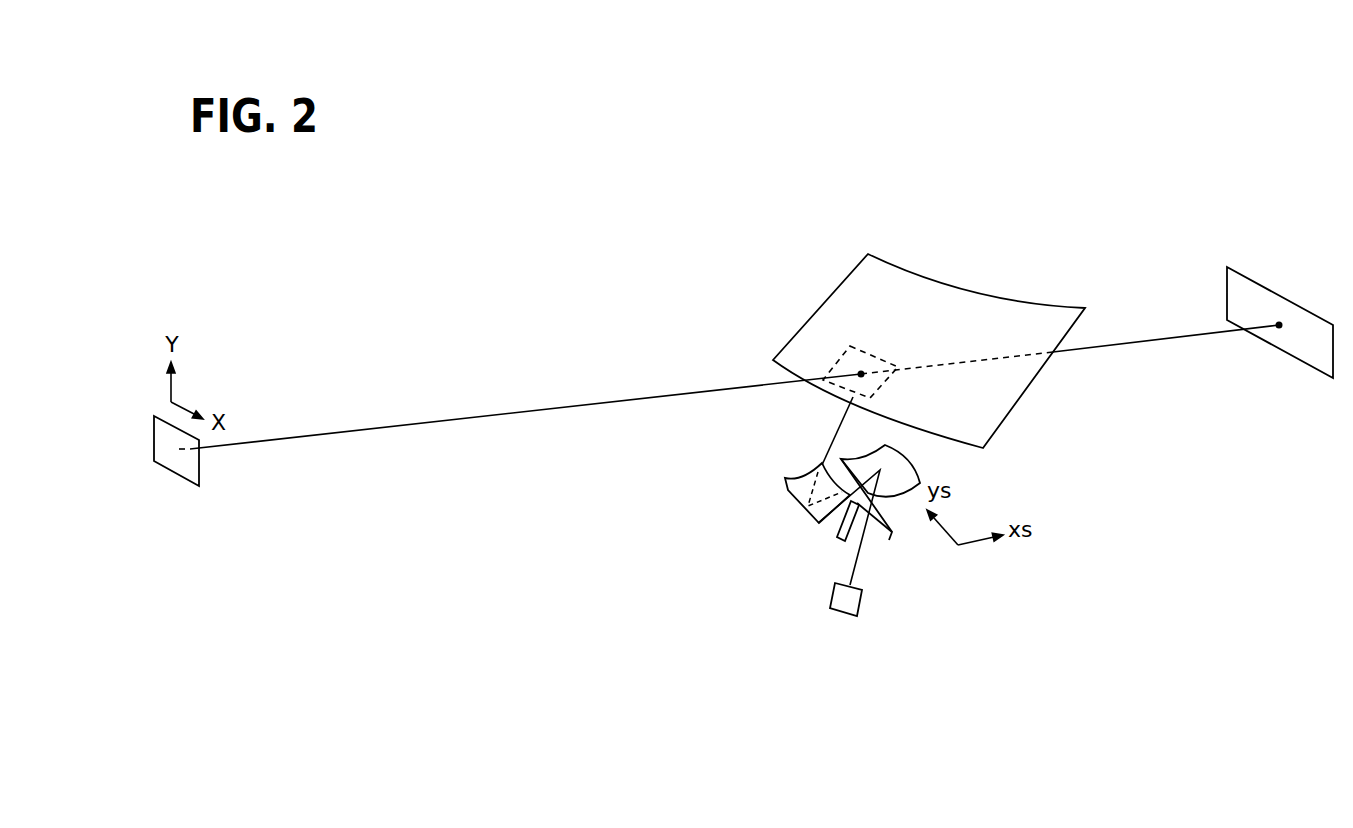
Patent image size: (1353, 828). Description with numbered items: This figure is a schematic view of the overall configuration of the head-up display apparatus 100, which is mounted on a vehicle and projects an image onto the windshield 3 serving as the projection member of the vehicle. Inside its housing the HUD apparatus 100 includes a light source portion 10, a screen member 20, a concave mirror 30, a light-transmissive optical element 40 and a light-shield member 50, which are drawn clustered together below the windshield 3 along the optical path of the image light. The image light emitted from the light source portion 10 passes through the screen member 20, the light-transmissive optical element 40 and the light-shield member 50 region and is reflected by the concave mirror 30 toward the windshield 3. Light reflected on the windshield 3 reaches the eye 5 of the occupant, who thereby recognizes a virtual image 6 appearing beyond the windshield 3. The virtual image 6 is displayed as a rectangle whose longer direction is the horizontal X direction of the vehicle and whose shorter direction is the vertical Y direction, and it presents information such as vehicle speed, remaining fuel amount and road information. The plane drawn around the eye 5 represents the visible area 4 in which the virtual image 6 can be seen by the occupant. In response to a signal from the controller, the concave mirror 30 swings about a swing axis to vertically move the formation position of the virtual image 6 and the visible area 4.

The windshield 3 is at (973, 292).
The visible area 4 is at (1225, 283).
The eye 5 is at (1281, 322).
The virtual image 6 is at (173, 476).
The light source portion 10 is at (835, 615).
The screen member 20 is at (902, 462).
The concave mirror 30 is at (787, 491).
The light-transmissive optical element 40 is at (892, 535).
The light-shield member 50 is at (838, 538).
The head-up display apparatus 100 is at (736, 552).